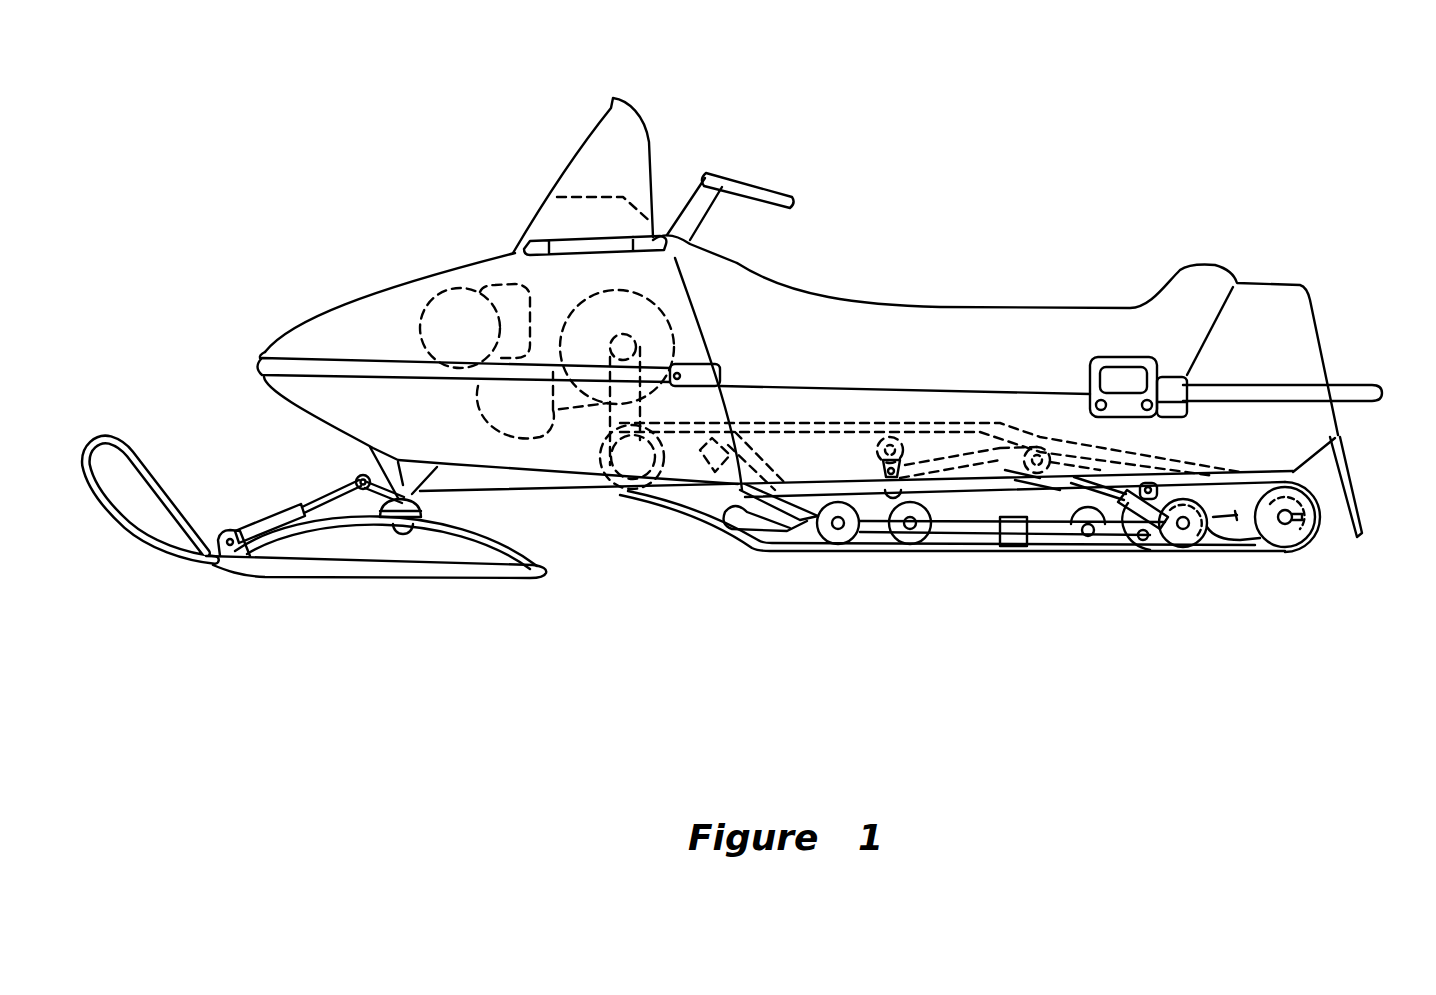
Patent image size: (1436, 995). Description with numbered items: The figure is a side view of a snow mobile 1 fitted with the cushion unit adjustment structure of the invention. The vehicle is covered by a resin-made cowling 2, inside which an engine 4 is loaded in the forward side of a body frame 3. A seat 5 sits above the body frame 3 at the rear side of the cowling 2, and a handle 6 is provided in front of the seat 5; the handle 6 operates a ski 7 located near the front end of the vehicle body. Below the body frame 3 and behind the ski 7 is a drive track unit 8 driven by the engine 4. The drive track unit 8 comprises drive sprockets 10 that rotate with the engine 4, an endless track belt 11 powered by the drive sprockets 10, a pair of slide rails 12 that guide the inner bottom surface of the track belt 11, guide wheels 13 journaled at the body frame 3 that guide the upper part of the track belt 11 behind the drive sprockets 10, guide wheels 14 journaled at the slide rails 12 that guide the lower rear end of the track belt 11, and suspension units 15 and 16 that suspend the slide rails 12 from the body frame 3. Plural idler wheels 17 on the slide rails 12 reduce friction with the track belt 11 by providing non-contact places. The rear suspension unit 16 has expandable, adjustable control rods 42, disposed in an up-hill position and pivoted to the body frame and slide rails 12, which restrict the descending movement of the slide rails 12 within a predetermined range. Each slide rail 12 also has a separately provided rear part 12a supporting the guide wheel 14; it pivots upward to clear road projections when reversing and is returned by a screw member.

The snow mobile 1 is at (940, 170).
The cowling 2 is at (392, 293).
The body frame 3 is at (785, 403).
The engine 4 is at (497, 293).
The seat 5 is at (957, 302).
The handle 6 is at (737, 177).
The ski 7 is at (332, 574).
The drive track unit 8 is at (992, 580).
The drive sprockets 10 is at (605, 490).
The track belt 11 is at (760, 552).
The slide rails 12 is at (947, 532).
The rear part 12a is at (1273, 553).
The guide wheels 13 is at (1042, 440).
The guide wheels 14 is at (1313, 527).
The suspension unit 15 is at (725, 503).
The rear suspension unit 16 is at (1058, 503).
The idler wheels 17 is at (897, 535).
The control rods 42 is at (1133, 543).